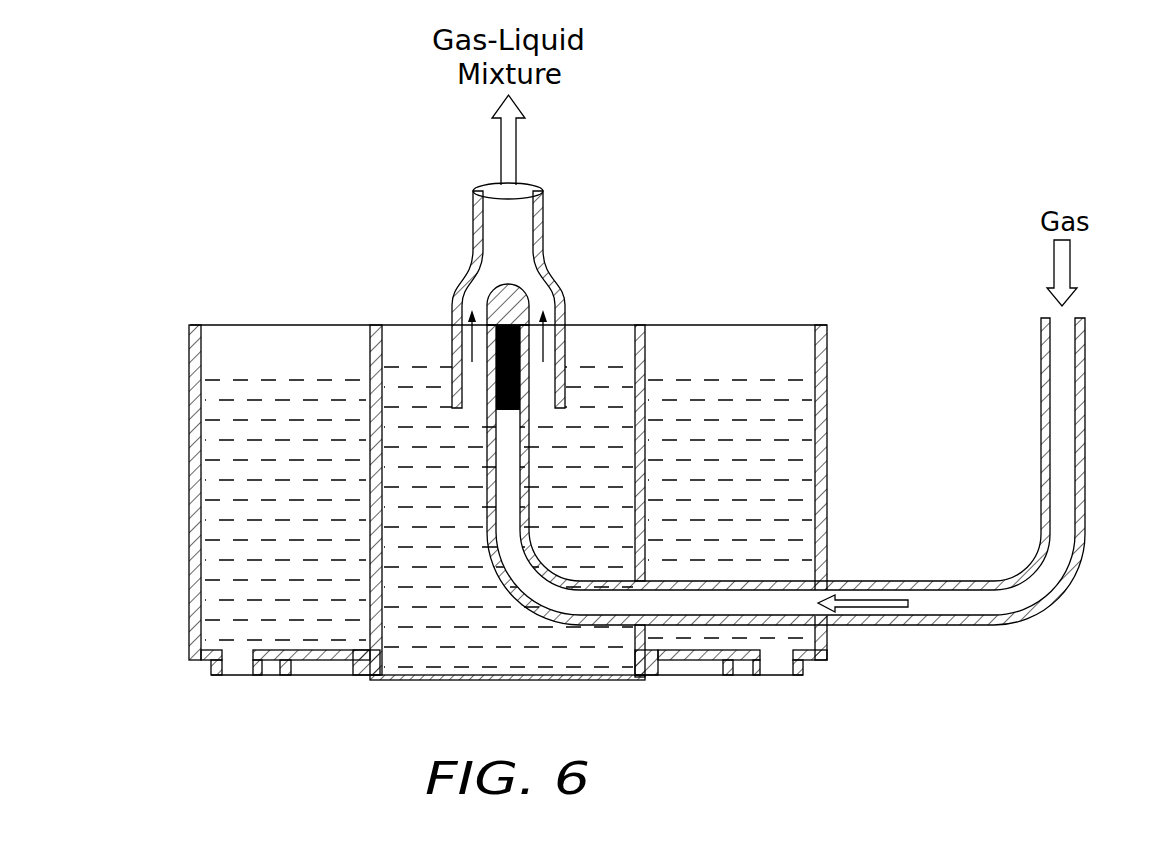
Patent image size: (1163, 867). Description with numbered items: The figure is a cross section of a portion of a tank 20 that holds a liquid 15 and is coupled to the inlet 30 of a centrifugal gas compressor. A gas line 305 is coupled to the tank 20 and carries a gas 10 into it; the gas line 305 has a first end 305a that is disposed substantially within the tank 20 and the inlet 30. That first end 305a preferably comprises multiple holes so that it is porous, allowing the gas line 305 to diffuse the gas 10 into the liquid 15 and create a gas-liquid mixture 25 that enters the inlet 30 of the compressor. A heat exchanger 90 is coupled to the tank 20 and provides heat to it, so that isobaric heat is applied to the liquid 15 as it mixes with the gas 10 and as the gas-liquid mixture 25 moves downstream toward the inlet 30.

The gas 10 is at (470, 360).
The liquid 15 is at (303, 482).
The tank 20 is at (243, 312).
The gas-liquid mixture 25 is at (512, 132).
The inlet 30 is at (538, 286).
The heat exchanger 90 is at (322, 668).
The gas line 305 is at (940, 582).
The first end 305a is at (530, 378).